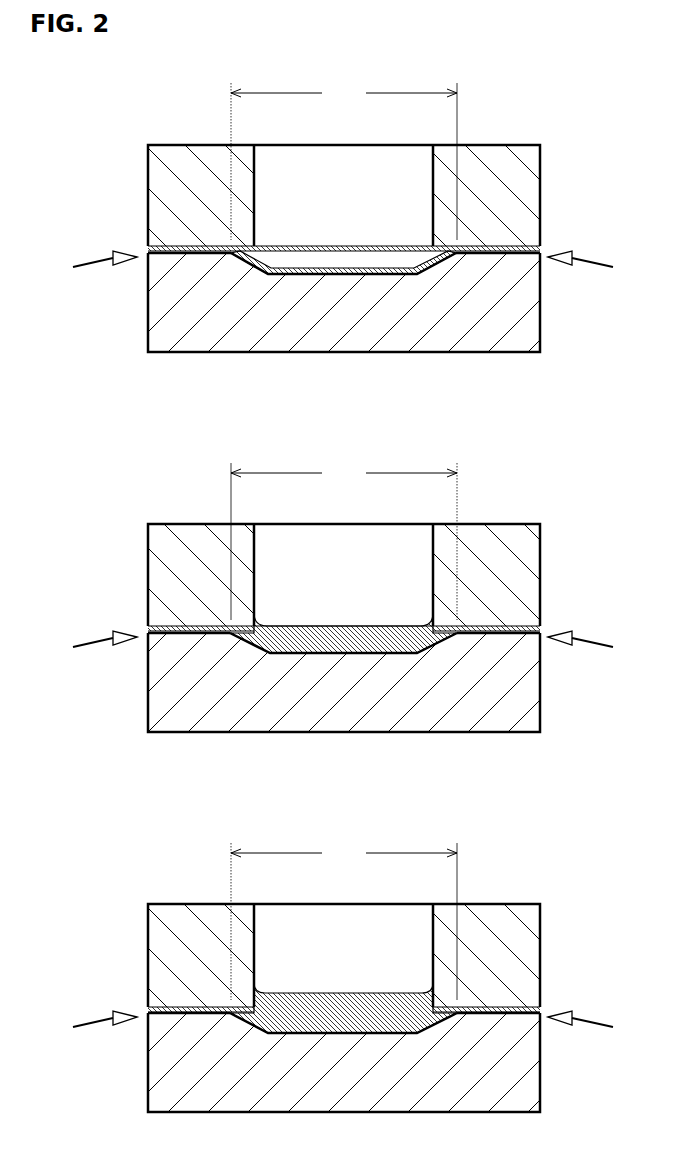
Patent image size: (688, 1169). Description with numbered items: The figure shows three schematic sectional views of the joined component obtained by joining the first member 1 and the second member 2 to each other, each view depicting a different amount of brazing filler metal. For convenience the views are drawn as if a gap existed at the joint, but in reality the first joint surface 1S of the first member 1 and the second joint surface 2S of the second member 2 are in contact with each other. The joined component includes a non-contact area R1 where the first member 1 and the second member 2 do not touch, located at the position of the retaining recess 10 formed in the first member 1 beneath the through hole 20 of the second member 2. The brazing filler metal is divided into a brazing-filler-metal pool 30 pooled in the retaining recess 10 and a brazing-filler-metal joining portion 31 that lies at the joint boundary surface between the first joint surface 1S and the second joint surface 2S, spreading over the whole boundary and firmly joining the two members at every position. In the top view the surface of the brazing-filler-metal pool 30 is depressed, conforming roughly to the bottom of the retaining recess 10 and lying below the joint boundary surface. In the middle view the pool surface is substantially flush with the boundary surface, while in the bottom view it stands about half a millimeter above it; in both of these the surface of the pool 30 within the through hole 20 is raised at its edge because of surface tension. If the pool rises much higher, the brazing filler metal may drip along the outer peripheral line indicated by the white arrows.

The first member 1 is at (540, 310).
The second member 2 is at (540, 192).
The retaining recess 10 is at (390, 258).
The through hole 20 is at (408, 172).
The brazing-filler-metal pool 30 is at (320, 260).
The brazing-filler-metal joining portion 31 is at (182, 247).
The first joint surface 1S is at (518, 244).
The second joint surface 2S is at (497, 253).
The non-contact area R1 is at (344, 540).